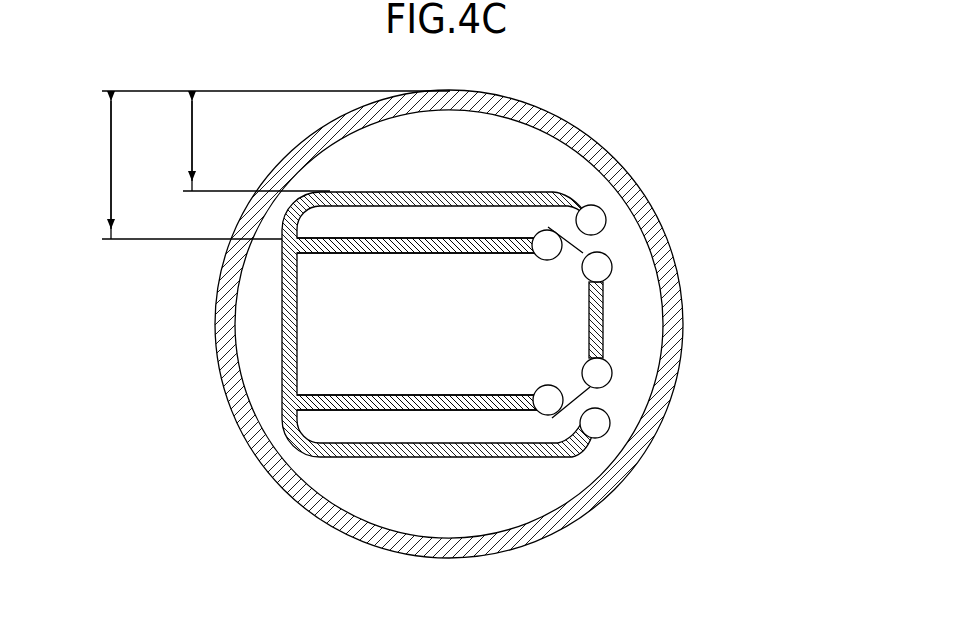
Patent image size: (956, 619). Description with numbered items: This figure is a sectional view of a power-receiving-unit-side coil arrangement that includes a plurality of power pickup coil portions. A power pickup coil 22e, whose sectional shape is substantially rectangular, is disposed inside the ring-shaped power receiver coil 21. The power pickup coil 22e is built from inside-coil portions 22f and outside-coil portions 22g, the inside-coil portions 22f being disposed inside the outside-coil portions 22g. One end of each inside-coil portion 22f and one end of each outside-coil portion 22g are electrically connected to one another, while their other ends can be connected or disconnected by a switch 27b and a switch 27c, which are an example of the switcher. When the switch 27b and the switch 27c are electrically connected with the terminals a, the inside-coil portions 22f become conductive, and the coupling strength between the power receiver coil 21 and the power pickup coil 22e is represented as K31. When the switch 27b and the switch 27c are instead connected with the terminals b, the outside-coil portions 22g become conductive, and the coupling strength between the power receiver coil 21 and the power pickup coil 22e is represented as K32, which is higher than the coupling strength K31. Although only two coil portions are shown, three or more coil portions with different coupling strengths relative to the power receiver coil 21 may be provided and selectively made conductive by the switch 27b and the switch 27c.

The power receiver coil 21 is at (607, 148).
The outside-coil portions 22g is at (442, 192).
The inside-coil portions 22f is at (392, 255).
The power pickup coil 22e is at (605, 320).
The terminals a is at (545, 260).
The terminals b is at (595, 217).
The switch 27b is at (620, 252).
The switch 27c is at (627, 383).
The coupling strength K31 is at (90, 165).
The coupling strength K32 is at (172, 141).